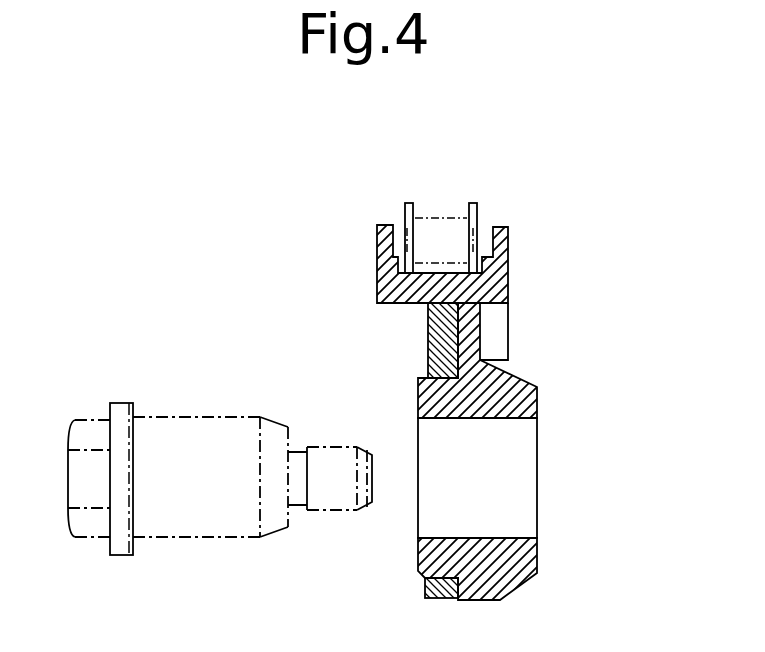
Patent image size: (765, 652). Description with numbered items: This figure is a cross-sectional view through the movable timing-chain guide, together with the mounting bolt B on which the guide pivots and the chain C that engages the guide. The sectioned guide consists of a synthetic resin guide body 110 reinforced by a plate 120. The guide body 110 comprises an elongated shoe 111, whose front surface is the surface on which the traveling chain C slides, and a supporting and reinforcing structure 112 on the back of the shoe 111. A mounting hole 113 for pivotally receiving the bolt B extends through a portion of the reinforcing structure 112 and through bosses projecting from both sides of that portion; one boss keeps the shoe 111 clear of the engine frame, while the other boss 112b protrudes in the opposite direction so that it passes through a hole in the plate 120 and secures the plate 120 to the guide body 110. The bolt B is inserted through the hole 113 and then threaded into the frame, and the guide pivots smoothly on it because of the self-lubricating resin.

The synthetic resin guide body 110 is at (507, 412).
The shoe 111 is at (493, 286).
The supporting and reinforcing structure 112 is at (475, 333).
The boss 112b is at (417, 557).
The mounting hole 113 is at (500, 420).
The plate 120 is at (428, 342).
The connector terminal C is at (442, 220).
The bolt B is at (202, 417).